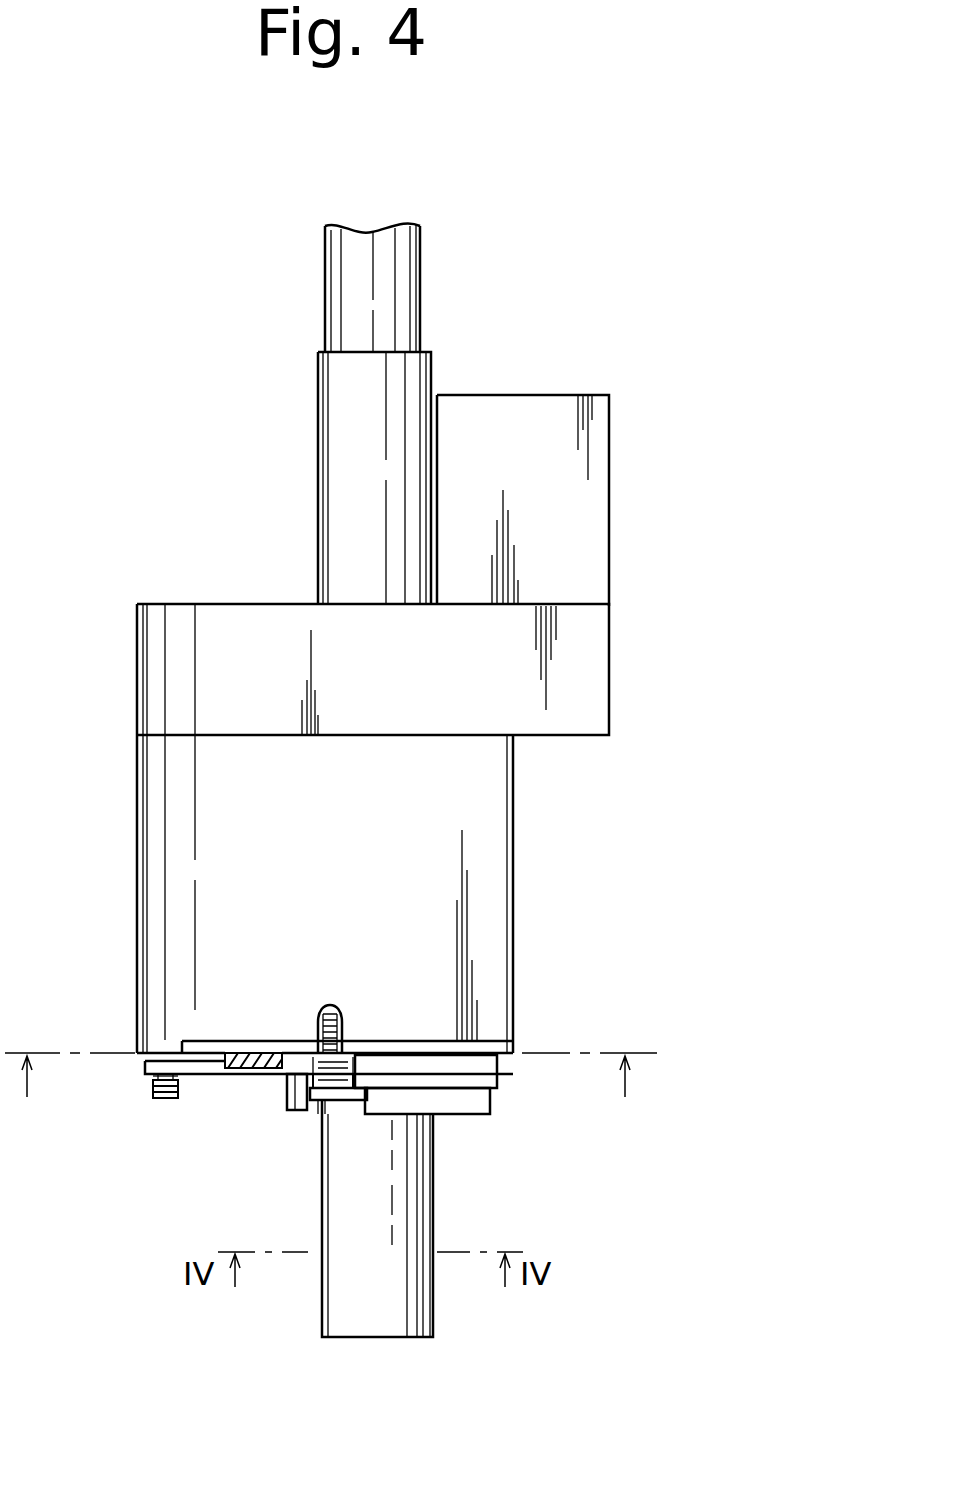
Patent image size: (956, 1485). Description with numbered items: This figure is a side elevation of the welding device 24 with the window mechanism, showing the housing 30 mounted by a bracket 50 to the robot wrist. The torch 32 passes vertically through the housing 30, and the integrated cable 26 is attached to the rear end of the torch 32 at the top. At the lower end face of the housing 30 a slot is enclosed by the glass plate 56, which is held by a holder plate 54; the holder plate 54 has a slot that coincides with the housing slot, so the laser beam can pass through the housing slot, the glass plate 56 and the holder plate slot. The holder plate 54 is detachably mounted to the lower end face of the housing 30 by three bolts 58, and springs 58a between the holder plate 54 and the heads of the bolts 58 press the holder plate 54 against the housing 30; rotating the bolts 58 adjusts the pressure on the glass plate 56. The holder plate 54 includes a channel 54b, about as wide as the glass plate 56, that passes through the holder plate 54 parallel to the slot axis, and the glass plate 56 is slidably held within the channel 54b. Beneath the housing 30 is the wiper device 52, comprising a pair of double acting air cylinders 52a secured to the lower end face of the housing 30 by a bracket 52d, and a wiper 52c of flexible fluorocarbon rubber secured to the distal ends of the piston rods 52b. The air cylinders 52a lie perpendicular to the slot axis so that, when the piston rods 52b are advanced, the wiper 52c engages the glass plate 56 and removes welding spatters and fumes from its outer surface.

The mounting assembly 24 is at (135, 380).
The integrated cable 26 is at (420, 262).
The housing 30 is at (137, 790).
The torch 32 is at (318, 455).
The bracket 50 is at (609, 483).
The bracket 52 is at (424, 1140).
The double acting air cylinders 52a is at (500, 1098).
The piston rods 52b is at (343, 1102).
The wiper 52c is at (287, 1090).
The bracket 52d is at (500, 1065).
The holder plate 54 is at (192, 1076).
The channel 54b is at (225, 1040).
The glass plate 56 is at (247, 1043).
The bolts 58 is at (343, 1032).
The springs 58a is at (355, 1065).